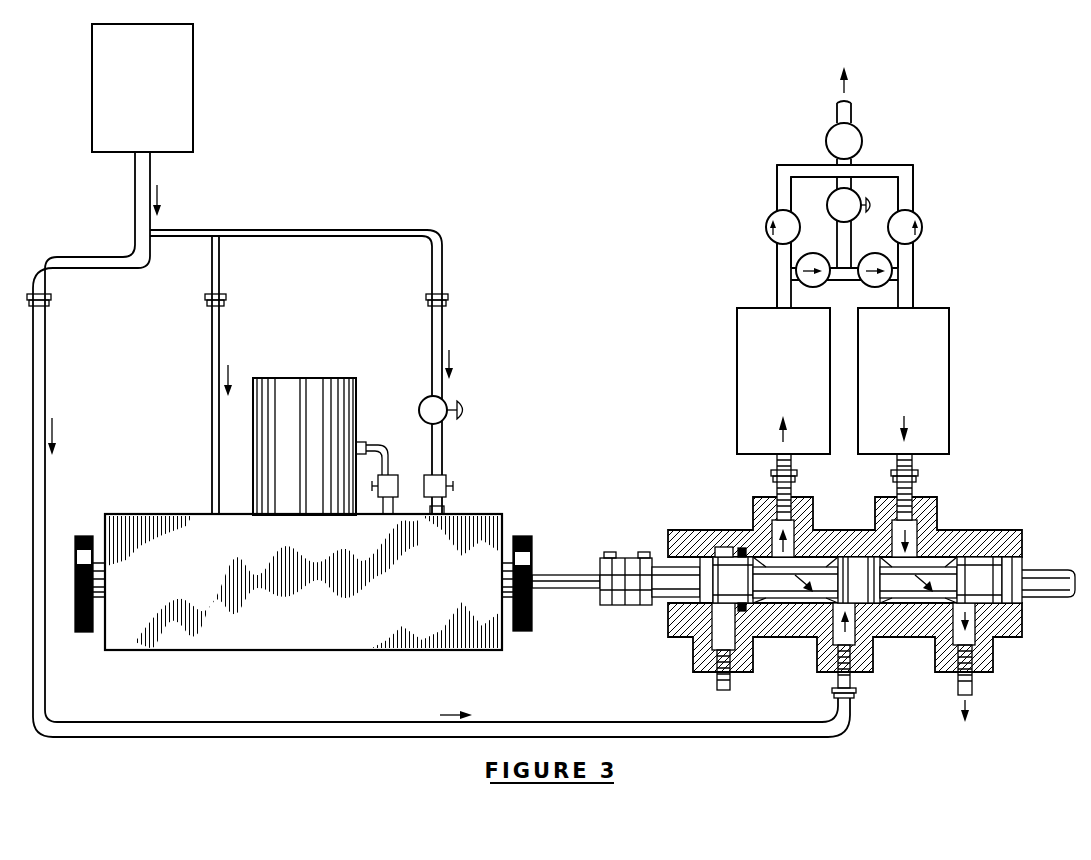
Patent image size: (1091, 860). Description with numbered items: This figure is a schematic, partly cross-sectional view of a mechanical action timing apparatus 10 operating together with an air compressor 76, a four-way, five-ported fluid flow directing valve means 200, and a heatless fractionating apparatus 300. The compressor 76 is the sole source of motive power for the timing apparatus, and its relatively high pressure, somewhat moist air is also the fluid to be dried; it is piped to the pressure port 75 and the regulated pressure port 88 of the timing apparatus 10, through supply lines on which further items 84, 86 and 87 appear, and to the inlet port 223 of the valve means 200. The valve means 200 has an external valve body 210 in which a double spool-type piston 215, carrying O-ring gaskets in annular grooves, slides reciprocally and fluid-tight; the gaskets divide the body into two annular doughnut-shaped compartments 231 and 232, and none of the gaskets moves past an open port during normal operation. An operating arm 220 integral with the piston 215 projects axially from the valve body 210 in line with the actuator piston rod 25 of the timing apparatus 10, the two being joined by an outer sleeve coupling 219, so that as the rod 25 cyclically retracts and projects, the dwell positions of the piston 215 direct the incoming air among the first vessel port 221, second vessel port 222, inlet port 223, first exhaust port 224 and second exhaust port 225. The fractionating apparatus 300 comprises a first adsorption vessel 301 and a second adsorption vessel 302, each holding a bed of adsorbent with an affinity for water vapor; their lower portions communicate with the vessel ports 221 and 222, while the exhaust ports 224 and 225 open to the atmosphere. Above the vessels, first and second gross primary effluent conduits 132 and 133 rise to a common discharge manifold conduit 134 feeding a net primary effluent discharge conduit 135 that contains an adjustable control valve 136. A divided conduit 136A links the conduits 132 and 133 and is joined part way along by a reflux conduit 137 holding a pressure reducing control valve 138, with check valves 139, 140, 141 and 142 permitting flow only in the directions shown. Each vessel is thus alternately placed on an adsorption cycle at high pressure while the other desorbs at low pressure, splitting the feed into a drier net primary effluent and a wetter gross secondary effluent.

The mechanical action timing apparatus 10 is at (176, 662).
The actuator piston rod 25 is at (547, 574).
The pressure port 75 is at (212, 512).
The air compressor 76 is at (193, 107).
The valve 84 is at (398, 480).
The valve 86 is at (448, 404).
The valve 87 is at (448, 483).
The regulated pressure port 88 is at (446, 511).
The first gross primary effluent conduit 132 is at (777, 300).
The second gross primary effluent conduit 133 is at (913, 300).
The common discharge manifold conduit 134 is at (913, 191).
The common net primary effluent discharge conduit 135 is at (853, 116).
The adjustable control valve 136 is at (826, 143).
The divided conduit 136A is at (844, 288).
The reflux conduit 137 is at (837, 258).
The pressure reducing control valve 138 is at (832, 210).
The check valve 139 is at (768, 222).
The check valve 140 is at (797, 268).
The check valve 141 is at (920, 222).
The check valve 142 is at (892, 268).
The fluid flow directing valve means 200 is at (871, 585).
The valve body 210 is at (722, 530).
The double spool-type piston 215 is at (724, 590).
The outer sleeve coupling 219 is at (600, 607).
The operating arm 220 is at (660, 600).
The first vessel port 221 is at (800, 494).
The second vessel port 222 is at (917, 494).
The inlet port 223 is at (857, 677).
The first exhaust port 224 is at (735, 683).
The second exhaust port 225 is at (977, 677).
The annular compartment 231 is at (776, 540).
The annular compartment 232 is at (906, 532).
The fractionating apparatus 300 is at (887, 260).
The first adsorption vessel 301 is at (773, 388).
The second adsorption vessel 302 is at (893, 388).